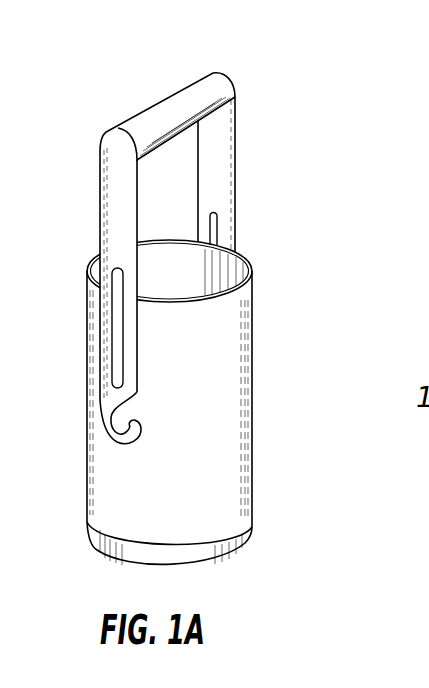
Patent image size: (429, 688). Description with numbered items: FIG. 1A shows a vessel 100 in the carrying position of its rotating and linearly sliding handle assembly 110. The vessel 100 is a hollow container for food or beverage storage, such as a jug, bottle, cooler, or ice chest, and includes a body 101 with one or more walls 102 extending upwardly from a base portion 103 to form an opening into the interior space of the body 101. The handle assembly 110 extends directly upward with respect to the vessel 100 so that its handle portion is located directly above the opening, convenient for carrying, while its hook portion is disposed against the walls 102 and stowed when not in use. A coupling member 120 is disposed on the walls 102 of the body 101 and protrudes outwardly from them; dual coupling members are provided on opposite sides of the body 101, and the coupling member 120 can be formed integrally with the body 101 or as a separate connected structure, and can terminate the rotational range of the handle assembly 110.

The vessel 100 is at (200, 310).
The body 101 is at (180, 417).
The walls 102 is at (248, 371).
The base portion 103 is at (211, 560).
The handle assembly 110 is at (226, 258).
The coupling member 120 is at (146, 408).